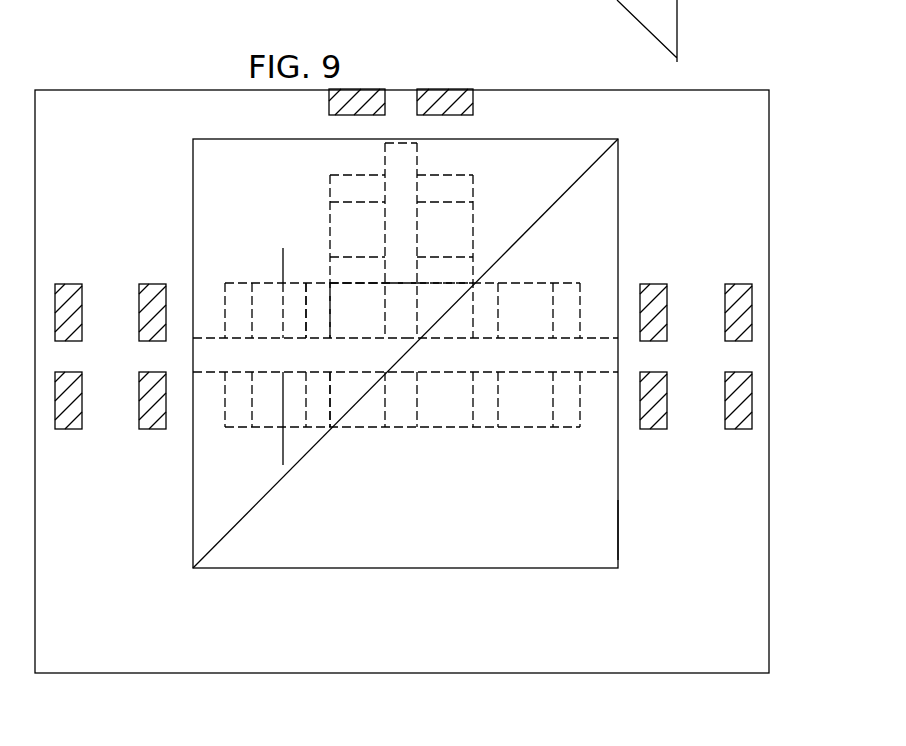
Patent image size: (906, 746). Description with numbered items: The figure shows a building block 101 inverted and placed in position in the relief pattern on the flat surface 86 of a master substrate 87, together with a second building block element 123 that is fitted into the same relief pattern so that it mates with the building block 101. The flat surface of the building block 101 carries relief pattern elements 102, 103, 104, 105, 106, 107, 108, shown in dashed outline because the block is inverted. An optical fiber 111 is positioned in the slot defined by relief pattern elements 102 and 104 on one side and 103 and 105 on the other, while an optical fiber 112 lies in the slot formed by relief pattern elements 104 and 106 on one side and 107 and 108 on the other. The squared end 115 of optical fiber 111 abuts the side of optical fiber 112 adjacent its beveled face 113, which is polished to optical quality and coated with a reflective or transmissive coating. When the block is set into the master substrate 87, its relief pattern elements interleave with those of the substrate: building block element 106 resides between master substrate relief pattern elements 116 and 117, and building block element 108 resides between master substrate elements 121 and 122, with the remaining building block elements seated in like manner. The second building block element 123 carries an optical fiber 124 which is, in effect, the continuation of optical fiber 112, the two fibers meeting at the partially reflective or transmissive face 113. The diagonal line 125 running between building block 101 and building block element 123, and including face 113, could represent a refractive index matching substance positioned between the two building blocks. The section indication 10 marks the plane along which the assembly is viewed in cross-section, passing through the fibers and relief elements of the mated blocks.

The section line 10 is at (275, 258).
The flat surface 86 is at (708, 205).
The master substrate 87 is at (200, 62).
The building block 101 is at (573, 131).
The relief pattern element 102 is at (337, 214).
The relief pattern element 103 is at (468, 213).
The relief pattern element 104 is at (356, 328).
The relief pattern element 105 is at (443, 293).
The relief pattern element 106 is at (293, 288).
The relief pattern element 107 is at (353, 397).
The relief pattern element 108 is at (300, 432).
The optical fiber 111 is at (418, 157).
The optical fiber 112 is at (193, 353).
The beveled face 113 is at (398, 347).
The squared end 115 is at (390, 324).
The master substrate relief pattern element 116 is at (238, 292).
The master substrate relief pattern element 117 is at (323, 333).
The master substrate relief pattern element 121 is at (228, 422).
The master substrate relief pattern element 122 is at (318, 420).
The second building block element 123 is at (636, 527).
The optical fiber 124 is at (614, 352).
The diagonal line 125 is at (543, 218).